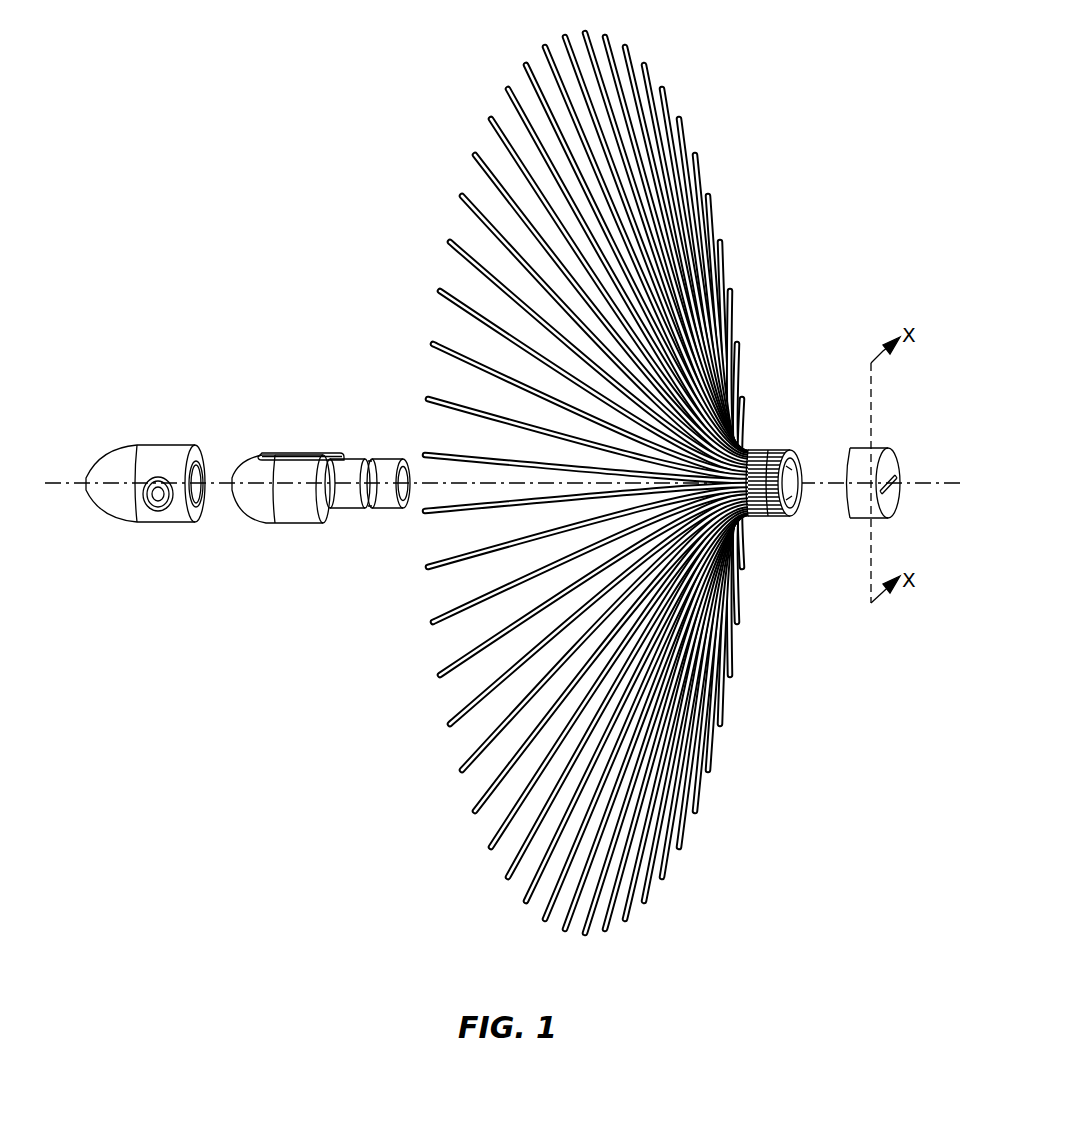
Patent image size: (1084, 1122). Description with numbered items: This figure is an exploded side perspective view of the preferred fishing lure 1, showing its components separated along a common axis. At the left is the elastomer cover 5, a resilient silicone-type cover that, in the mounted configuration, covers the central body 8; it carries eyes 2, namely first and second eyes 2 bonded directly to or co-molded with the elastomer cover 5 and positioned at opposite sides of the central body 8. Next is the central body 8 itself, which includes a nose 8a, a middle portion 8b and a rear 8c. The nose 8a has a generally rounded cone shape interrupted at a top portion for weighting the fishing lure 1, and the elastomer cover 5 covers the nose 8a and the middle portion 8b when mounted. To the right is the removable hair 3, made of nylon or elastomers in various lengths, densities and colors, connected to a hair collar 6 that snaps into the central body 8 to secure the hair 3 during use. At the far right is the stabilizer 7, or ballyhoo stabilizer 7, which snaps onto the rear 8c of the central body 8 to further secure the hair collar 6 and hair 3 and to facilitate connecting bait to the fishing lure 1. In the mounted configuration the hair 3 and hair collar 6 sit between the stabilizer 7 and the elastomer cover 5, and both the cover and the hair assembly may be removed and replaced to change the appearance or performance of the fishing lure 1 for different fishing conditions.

The fishing lure 1 is at (128, 387).
The eyes 2 is at (150, 500).
The removable hair 3 is at (717, 165).
The elastomer cover 5 is at (113, 519).
The hair collar 6 is at (801, 490).
The stabilizer 7 is at (860, 448).
The central body 8 is at (318, 488).
The nose 8a is at (257, 508).
The middle portion 8b is at (312, 526).
The rear 8c is at (392, 512).